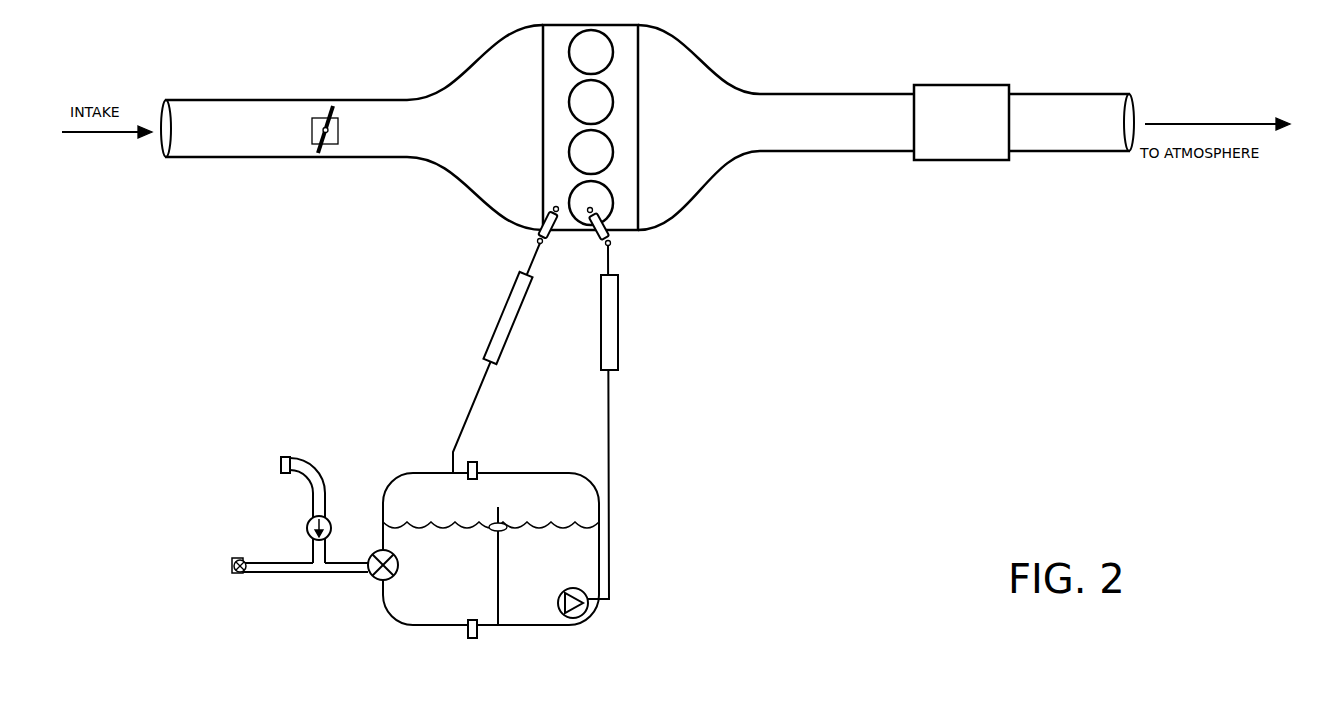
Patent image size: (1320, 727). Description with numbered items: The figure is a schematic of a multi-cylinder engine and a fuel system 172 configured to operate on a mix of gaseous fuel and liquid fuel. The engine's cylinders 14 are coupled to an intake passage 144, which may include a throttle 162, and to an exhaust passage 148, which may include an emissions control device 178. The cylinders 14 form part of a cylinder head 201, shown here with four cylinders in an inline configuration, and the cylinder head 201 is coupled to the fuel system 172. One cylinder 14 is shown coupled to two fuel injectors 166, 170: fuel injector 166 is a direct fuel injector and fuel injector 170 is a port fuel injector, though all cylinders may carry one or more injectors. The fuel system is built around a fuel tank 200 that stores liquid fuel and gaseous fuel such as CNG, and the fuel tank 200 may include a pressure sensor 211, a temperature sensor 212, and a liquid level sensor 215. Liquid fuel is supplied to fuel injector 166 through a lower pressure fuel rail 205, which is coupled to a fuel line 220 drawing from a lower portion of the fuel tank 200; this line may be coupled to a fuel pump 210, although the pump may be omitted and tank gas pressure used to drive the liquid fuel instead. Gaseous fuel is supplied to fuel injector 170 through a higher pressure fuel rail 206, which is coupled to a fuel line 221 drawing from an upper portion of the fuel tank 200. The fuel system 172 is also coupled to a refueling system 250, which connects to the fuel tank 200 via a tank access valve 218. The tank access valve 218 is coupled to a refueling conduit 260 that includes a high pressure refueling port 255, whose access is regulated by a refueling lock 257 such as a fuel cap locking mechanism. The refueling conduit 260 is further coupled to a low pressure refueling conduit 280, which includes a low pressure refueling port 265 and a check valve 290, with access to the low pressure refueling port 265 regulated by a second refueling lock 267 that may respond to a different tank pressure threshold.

The cylinders 14 is at (612, 194).
The intake passage 144 is at (290, 138).
The exhaust passage 148 is at (728, 137).
The throttle 162 is at (338, 139).
The fuel injector 166 is at (612, 241).
The fuel injector 170 is at (536, 238).
The fuel system 172 is at (342, 261).
The emissions control device 178 is at (975, 132).
The fuel tank 200 is at (392, 620).
The cylinder head 201 is at (640, 107).
The fuel rail 205 is at (601, 370).
The fuel rail 206 is at (490, 350).
The fuel pump 210 is at (560, 617).
The pressure sensor 211 is at (480, 464).
The temperature sensor 212 is at (468, 638).
The liquid level sensor 215 is at (503, 510).
The tank access valve 218 is at (375, 579).
The fuel line 220 is at (608, 425).
The fuel line 221 is at (464, 421).
The refueling system 250 is at (268, 436).
The high pressure refueling port 255 is at (247, 562).
The refueling lock 257 is at (232, 574).
The refueling conduit 260 is at (285, 574).
The low pressure refueling port 265 is at (292, 458).
The refueling lock 267 is at (291, 473).
The low pressure refueling conduit 280 is at (312, 503).
The check valve 290 is at (326, 528).